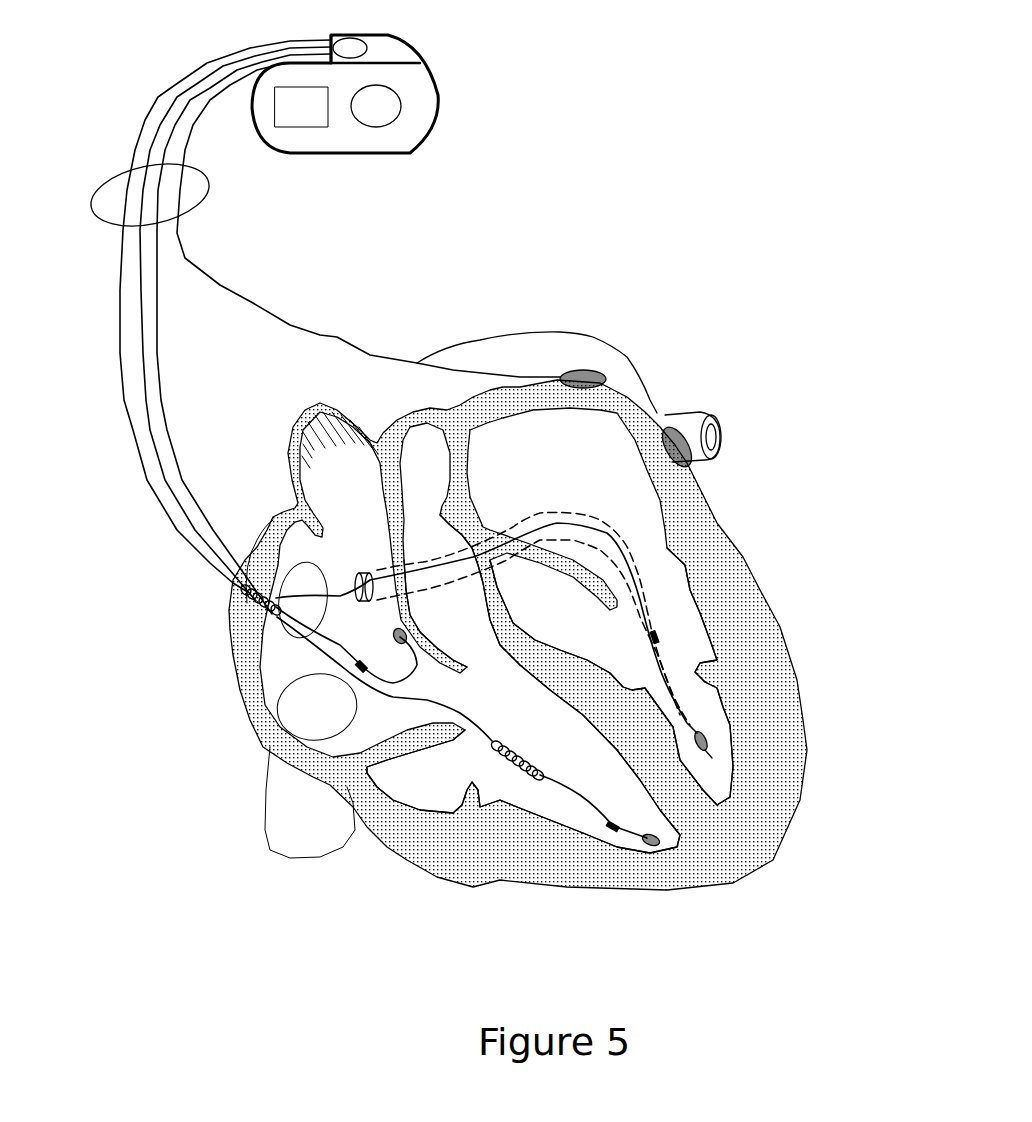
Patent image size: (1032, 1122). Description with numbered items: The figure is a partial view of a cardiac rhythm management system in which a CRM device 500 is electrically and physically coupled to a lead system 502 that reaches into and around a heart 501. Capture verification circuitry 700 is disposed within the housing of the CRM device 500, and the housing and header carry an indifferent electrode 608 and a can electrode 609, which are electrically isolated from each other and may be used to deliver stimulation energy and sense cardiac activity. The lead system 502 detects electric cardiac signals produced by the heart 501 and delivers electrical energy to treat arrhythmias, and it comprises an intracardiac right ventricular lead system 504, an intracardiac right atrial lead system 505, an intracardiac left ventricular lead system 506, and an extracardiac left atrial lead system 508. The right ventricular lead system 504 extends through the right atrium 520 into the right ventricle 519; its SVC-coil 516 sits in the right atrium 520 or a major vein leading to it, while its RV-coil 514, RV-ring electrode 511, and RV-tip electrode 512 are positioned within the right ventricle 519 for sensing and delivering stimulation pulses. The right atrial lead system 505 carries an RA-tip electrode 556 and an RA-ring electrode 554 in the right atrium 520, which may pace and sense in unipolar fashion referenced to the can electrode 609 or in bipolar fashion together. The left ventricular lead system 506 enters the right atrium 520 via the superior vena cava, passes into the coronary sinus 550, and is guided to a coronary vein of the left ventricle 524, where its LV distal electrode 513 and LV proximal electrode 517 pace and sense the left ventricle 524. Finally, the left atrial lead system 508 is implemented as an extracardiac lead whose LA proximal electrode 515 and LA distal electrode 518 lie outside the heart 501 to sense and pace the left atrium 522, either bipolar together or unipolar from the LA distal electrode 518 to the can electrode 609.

The CRM device 500 is at (390, 36).
The indifferent electrode 608 is at (352, 44).
The can electrode 609 is at (398, 107).
The capture verification circuitry 700 is at (302, 103).
The lead system 502 is at (117, 177).
The right ventricular lead system 504 is at (120, 343).
The right atrial lead system 505 is at (143, 370).
The left ventricular lead system 506 is at (163, 407).
The left atrial lead system 508 is at (253, 303).
The heart 501 is at (758, 597).
The LA proximal electrode 515 is at (575, 372).
The LA distal electrode 518 is at (673, 428).
The SVC-coil 516 is at (240, 598).
The coronary sinus 550 is at (367, 572).
The RA-tip electrode 556 is at (396, 632).
The RA-ring electrode 554 is at (383, 653).
The right atrium 520 is at (470, 632).
The right ventricle 519 is at (523, 684).
The left atrium 522 is at (600, 606).
The left ventricle 524 is at (611, 676).
The RV-coil 514 is at (493, 757).
The RV-ring electrode 511 is at (612, 823).
The RV-tip electrode 512 is at (647, 830).
The LV proximal electrode 517 is at (660, 637).
The LV distal electrode 513 is at (714, 755).